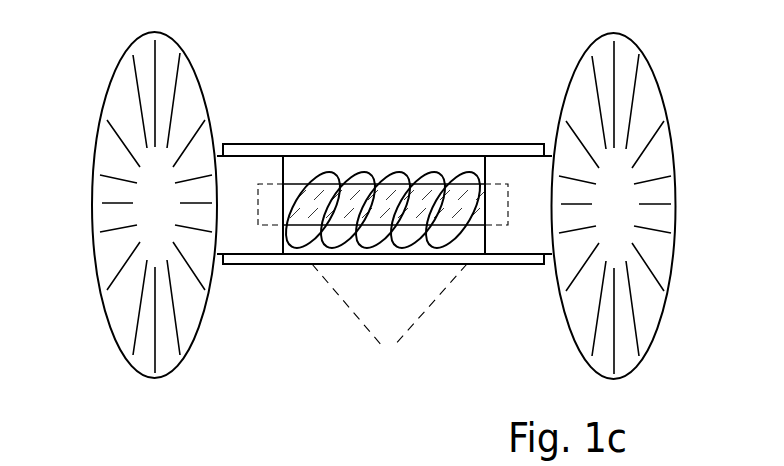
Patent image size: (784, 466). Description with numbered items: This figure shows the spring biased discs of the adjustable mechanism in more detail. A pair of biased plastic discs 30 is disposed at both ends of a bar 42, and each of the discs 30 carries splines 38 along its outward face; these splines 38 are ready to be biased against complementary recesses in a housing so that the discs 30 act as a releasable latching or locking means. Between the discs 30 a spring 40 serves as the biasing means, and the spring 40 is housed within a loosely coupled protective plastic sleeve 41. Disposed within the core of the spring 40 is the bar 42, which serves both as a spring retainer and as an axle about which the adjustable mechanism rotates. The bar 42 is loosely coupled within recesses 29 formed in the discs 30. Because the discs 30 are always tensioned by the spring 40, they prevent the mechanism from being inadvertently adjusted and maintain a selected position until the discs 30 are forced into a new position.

The recesses 29 is at (389, 325).
The biased plastic discs 30 is at (112, 77).
The splines 38 is at (647, 268).
The spring 40 is at (405, 172).
The protective plastic sleeve 41 is at (315, 143).
The bar 42 is at (343, 193).